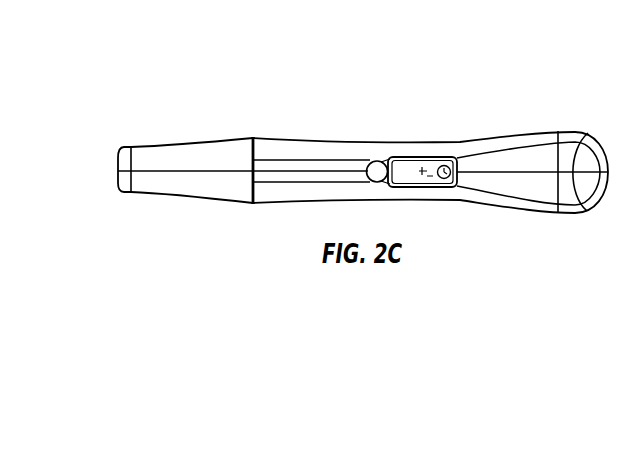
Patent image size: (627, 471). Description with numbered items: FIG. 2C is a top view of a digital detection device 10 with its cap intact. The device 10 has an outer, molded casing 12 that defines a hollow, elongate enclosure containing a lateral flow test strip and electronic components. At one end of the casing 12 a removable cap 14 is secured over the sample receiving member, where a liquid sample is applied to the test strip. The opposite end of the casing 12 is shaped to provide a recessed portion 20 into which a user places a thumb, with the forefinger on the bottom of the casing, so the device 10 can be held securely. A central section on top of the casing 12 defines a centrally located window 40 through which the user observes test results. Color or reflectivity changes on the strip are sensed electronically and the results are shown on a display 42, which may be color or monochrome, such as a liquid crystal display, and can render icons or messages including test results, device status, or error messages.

The device 10 is at (168, 78).
The casing 12 is at (310, 168).
The removable cap 14 is at (224, 152).
The recessed portion 20 is at (563, 158).
The window 40 is at (423, 157).
The display 42 is at (440, 157).